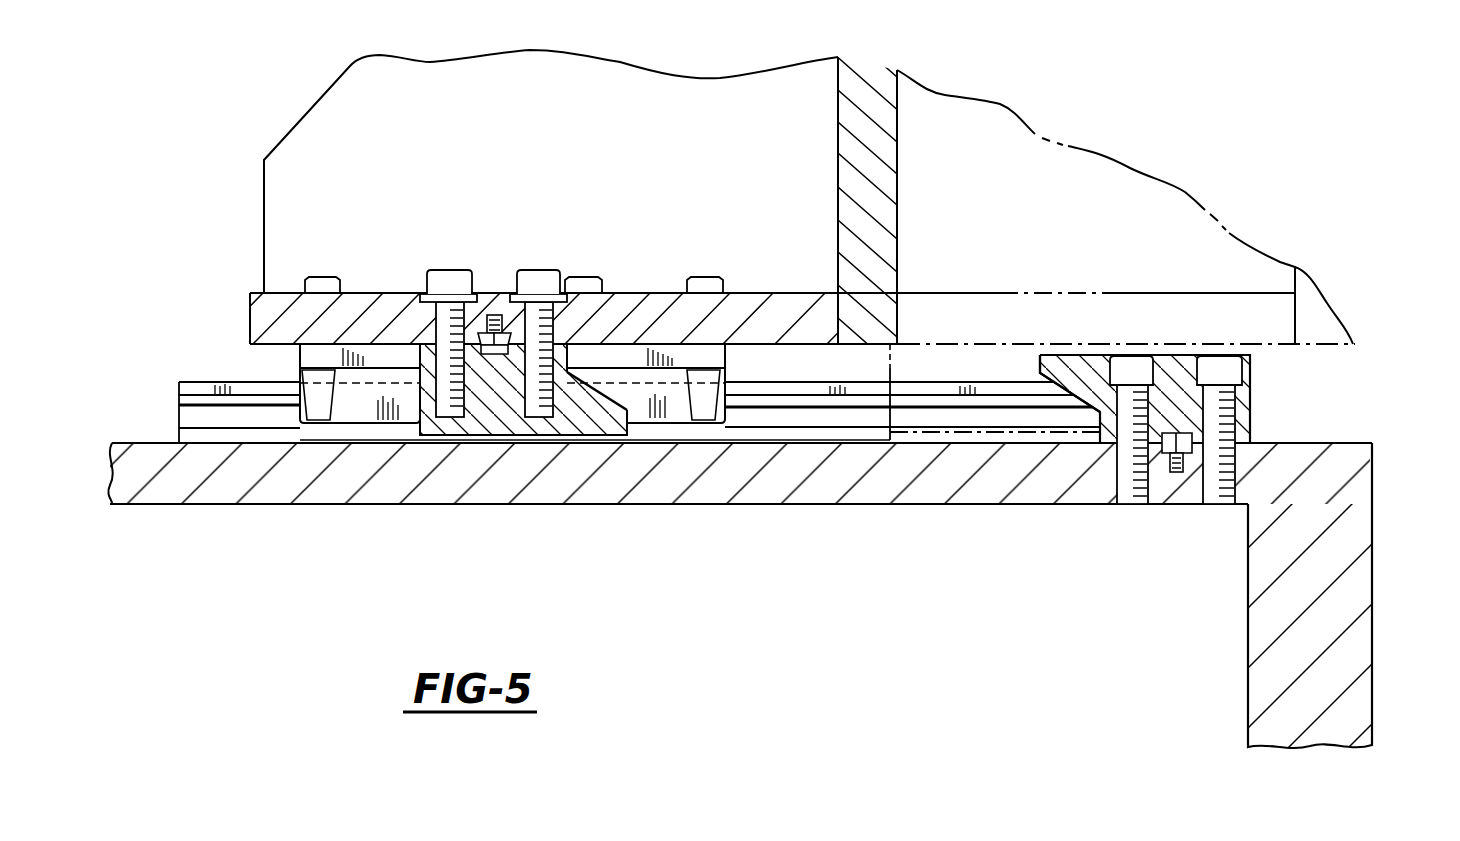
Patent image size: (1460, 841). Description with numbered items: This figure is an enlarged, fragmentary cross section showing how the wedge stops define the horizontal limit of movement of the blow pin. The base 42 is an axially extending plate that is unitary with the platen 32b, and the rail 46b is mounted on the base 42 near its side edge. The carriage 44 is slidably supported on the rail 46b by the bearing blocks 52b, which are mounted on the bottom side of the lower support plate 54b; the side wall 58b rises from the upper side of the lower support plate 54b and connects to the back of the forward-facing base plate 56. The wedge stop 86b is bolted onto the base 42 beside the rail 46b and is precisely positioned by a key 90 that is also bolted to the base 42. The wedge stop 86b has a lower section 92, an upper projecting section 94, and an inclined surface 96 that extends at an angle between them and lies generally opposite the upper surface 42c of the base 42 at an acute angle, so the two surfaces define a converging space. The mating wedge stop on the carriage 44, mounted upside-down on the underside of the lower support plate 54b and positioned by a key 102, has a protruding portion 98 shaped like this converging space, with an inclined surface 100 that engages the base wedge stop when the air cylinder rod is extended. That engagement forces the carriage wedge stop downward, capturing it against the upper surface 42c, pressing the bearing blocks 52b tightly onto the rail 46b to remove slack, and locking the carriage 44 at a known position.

The platen 32b is at (1360, 598).
The base 42 is at (273, 490).
The upper surface of base 42c is at (753, 440).
The carriage 44 is at (238, 174).
The rail 46b is at (216, 418).
The bearing blocks 52b is at (308, 355).
The lower support plate 54b is at (780, 300).
The base plate 56 is at (887, 146).
The side wall 58b is at (330, 117).
The wedge stop 86b is at (1258, 426).
The key 90 is at (1184, 460).
The lower section 92 is at (1105, 442).
The upper projecting section 94 is at (1062, 364).
The inclined surface 96 is at (1060, 385).
The protruding portion 98 is at (597, 431).
The inclined surface 100 is at (608, 402).
The key 102 is at (507, 328).